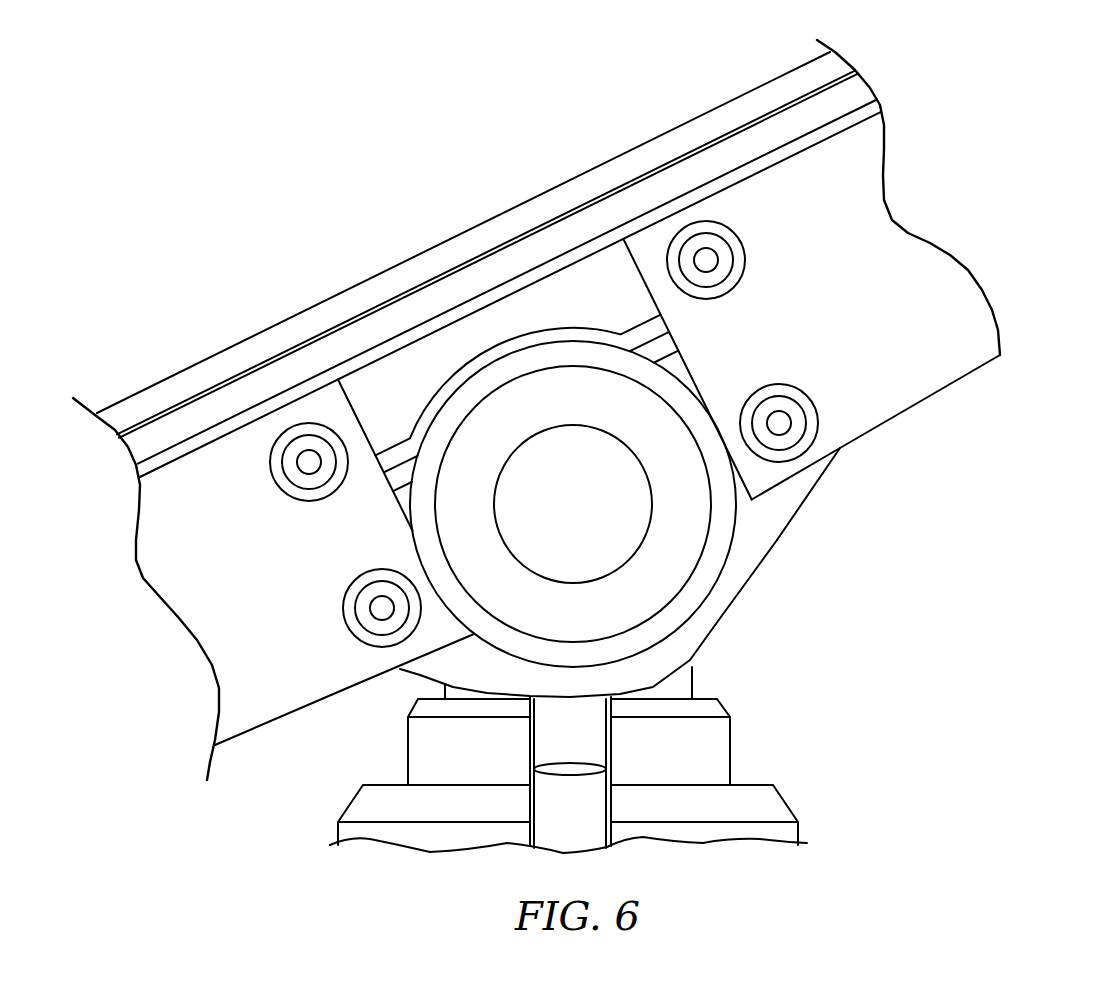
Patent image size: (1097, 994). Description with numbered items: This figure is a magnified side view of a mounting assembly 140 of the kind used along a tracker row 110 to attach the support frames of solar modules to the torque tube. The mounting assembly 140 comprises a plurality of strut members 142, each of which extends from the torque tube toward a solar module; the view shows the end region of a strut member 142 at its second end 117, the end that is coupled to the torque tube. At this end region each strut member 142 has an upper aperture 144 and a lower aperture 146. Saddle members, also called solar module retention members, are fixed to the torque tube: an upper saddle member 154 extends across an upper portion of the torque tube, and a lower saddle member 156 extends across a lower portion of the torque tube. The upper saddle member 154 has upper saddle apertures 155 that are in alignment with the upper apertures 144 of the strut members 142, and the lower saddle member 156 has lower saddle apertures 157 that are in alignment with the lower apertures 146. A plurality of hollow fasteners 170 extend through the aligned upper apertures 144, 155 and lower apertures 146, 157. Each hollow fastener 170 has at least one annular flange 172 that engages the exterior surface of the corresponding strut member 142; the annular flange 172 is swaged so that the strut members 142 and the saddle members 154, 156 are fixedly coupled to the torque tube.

The tracker row 110 is at (530, 363).
The second end 117 is at (205, 493).
The mounting assembly 140 is at (910, 673).
The strut member 142 is at (937, 300).
The upper aperture 144 is at (710, 222).
The lower aperture 146 is at (805, 460).
The upper saddle member 154 is at (440, 357).
The upper saddle aperture 155 is at (667, 253).
The lower saddle member 156 is at (713, 623).
The lower saddle aperture 157 is at (757, 460).
The hollow fastener 170 is at (722, 263).
The annular flange 172 is at (728, 242).